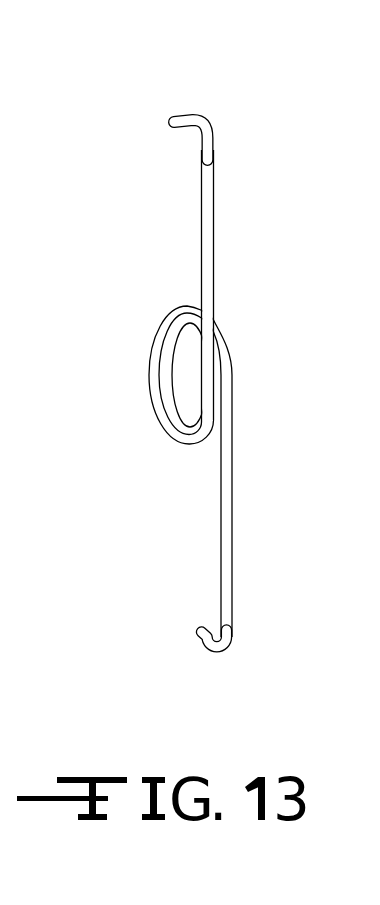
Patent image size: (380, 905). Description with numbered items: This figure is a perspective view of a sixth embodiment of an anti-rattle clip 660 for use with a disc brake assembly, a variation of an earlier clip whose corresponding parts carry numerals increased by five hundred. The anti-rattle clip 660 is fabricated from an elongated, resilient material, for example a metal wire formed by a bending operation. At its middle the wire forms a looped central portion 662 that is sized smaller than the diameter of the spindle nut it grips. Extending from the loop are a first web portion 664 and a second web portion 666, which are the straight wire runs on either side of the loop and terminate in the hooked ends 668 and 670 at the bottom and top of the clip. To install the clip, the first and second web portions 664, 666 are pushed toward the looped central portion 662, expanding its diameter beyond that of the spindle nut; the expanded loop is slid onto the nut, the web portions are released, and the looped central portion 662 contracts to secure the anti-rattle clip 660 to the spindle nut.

The anti-rattle clip 660 is at (194, 373).
The looped central portion 662 is at (152, 404).
The first web portion 664 is at (232, 528).
The second web portion 666 is at (214, 194).
The lower hook end 668 is at (204, 649).
The upper hook end 670 is at (175, 113).